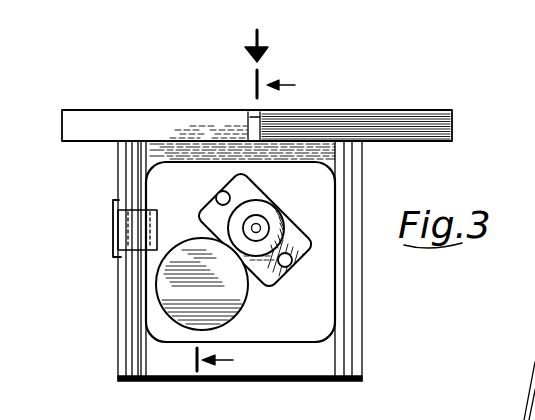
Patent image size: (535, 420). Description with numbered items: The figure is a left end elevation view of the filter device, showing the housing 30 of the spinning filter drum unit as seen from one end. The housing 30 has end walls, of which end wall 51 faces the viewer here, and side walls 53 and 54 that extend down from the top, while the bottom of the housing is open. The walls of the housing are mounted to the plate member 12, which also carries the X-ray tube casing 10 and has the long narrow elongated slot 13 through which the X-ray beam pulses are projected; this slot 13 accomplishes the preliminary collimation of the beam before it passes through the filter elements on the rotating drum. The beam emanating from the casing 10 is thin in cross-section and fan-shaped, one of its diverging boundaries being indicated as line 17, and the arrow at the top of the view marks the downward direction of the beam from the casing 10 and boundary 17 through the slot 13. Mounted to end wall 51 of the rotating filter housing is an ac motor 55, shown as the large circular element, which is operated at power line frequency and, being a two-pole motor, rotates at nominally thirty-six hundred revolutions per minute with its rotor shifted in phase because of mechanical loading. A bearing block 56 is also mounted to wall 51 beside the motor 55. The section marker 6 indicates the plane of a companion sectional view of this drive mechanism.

The casing 10 is at (259, 36).
The beam boundary 17 is at (288, 46).
The section line 6- 6 is at (255, 221).
The plate member 12 is at (427, 125).
The slot 13 is at (248, 126).
The housing 30 is at (100, 262).
The end wall 51 is at (305, 352).
The side wall 53 is at (132, 170).
The side wall 54 is at (353, 173).
The ac motor 55 is at (180, 299).
The bearing block 56 is at (283, 222).